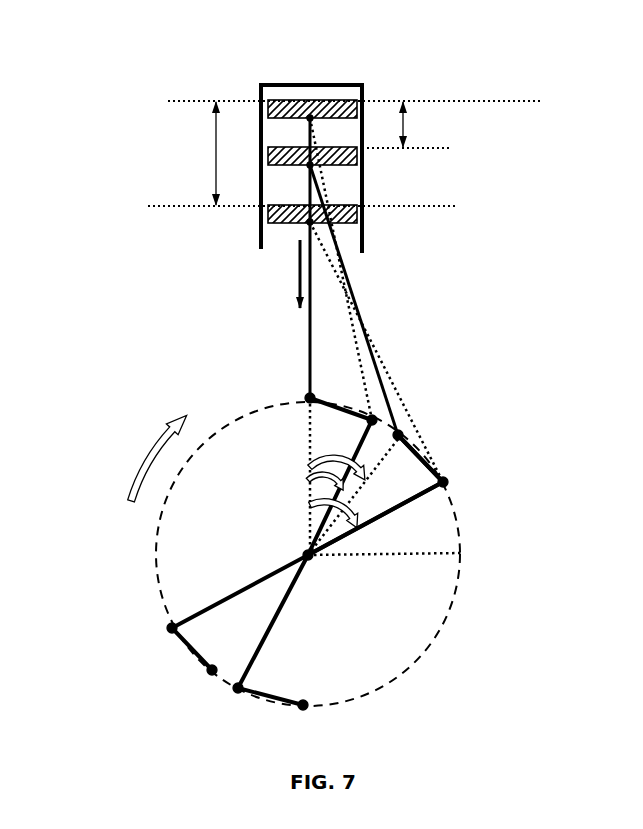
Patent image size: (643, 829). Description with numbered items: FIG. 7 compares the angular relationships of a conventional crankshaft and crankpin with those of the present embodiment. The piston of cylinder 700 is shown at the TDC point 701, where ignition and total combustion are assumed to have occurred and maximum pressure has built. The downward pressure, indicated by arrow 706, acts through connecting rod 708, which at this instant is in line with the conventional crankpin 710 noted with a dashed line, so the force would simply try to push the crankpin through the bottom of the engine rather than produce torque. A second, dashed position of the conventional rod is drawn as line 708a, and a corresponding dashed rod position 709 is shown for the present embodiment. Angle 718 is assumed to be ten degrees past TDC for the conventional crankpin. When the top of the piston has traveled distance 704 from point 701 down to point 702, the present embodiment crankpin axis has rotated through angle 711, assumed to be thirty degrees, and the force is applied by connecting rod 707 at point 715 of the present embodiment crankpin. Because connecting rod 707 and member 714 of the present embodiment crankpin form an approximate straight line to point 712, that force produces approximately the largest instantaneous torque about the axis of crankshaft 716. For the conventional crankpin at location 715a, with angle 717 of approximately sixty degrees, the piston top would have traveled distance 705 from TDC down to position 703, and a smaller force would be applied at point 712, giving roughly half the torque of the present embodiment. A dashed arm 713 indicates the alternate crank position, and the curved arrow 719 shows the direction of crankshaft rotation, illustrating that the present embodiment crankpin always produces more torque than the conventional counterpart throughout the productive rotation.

The cylinder 700 is at (260, 83).
The TDC point 701 is at (441, 99).
The point 702 is at (451, 150).
The position 703 is at (456, 207).
The distance 704 is at (408, 128).
The distance 705 is at (211, 163).
The arrow 706 is at (274, 274).
The connecting rod 707 is at (360, 300).
The connecting rod 708 is at (305, 356).
The control rod alternate position 708a is at (347, 336).
The connecting rod alternate position 709 is at (399, 380).
The crankpin 710 is at (306, 413).
The angle 711 is at (322, 452).
The point 712 is at (449, 478).
The crank arm alternate position 713 is at (386, 470).
The member 714 is at (421, 467).
The point 715 is at (408, 433).
The crankpin arm 715a is at (394, 518).
The crankshaft 716 is at (301, 558).
The angle 717 is at (321, 512).
The angle 718 is at (326, 488).
The crankshaft rotation direction 719 is at (150, 452).